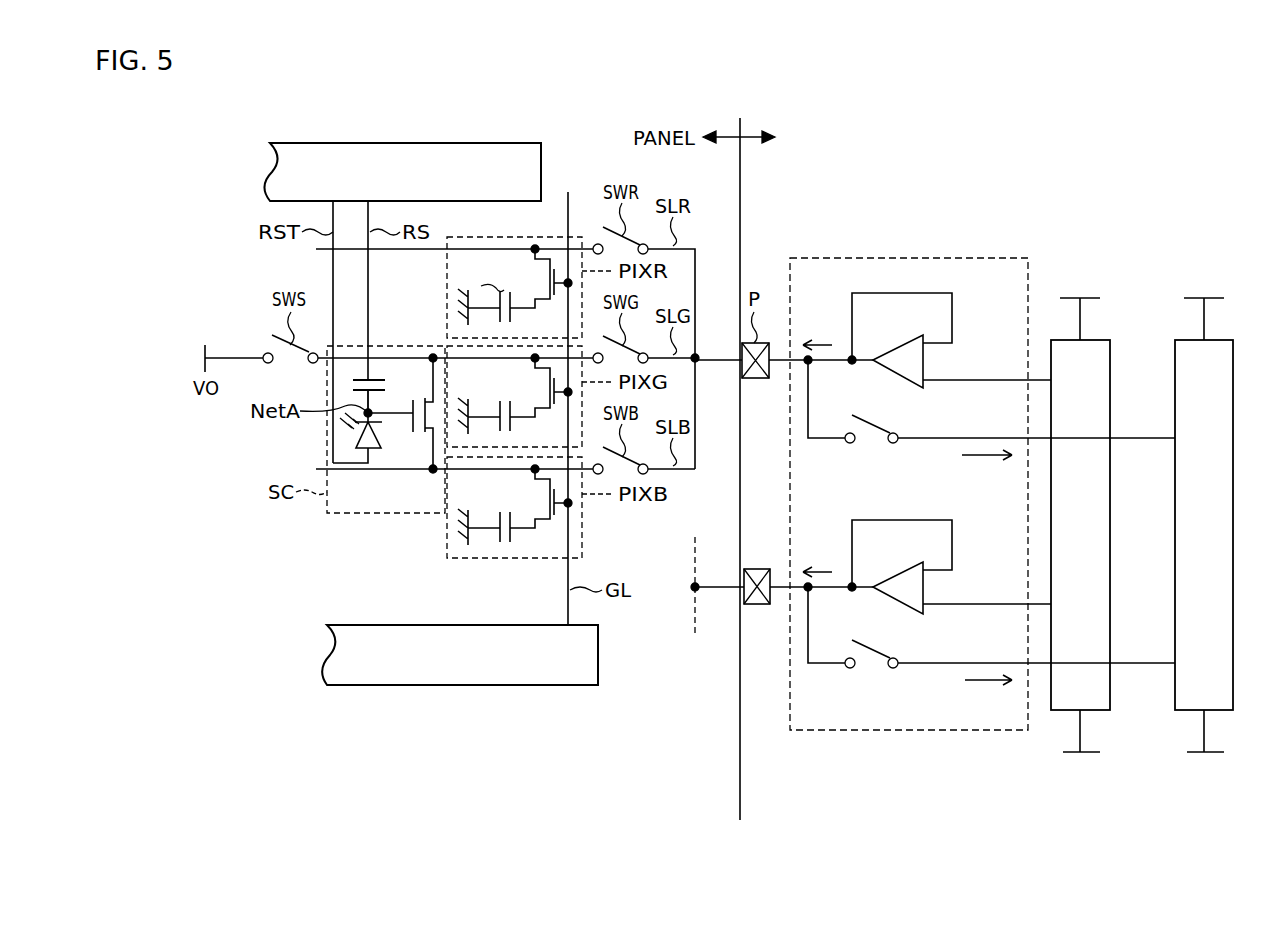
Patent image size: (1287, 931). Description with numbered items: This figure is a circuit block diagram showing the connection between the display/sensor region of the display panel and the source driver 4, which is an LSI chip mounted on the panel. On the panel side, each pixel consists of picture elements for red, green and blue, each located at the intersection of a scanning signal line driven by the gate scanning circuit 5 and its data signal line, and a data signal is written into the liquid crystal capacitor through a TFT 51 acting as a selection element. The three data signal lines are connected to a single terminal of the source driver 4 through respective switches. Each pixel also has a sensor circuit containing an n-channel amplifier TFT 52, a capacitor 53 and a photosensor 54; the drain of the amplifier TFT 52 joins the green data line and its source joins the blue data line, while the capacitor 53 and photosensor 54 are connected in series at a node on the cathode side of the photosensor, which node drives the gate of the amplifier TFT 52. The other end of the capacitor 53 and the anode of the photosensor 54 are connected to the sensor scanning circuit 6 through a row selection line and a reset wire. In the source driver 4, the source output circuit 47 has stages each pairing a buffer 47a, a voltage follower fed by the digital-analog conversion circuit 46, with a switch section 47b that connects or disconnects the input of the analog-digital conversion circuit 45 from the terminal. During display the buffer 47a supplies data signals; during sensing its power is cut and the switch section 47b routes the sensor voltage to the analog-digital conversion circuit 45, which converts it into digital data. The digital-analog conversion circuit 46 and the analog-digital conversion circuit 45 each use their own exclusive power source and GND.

The source driver 4 is at (906, 148).
The gate scanning circuit 5 is at (598, 660).
The sensor scanning circuit 6 is at (541, 178).
The analog-digital conversion circuit 45 is at (1235, 378).
The digital-analog conversion circuit 46 is at (1112, 378).
The source output circuit 47 is at (908, 258).
The buffer 47a is at (913, 390).
The switch section 47b is at (870, 440).
The TFT 51 is at (546, 245).
The amplifier TFT 52 is at (420, 440).
The capacitor 53 is at (385, 378).
The photosensor 54 is at (378, 450).